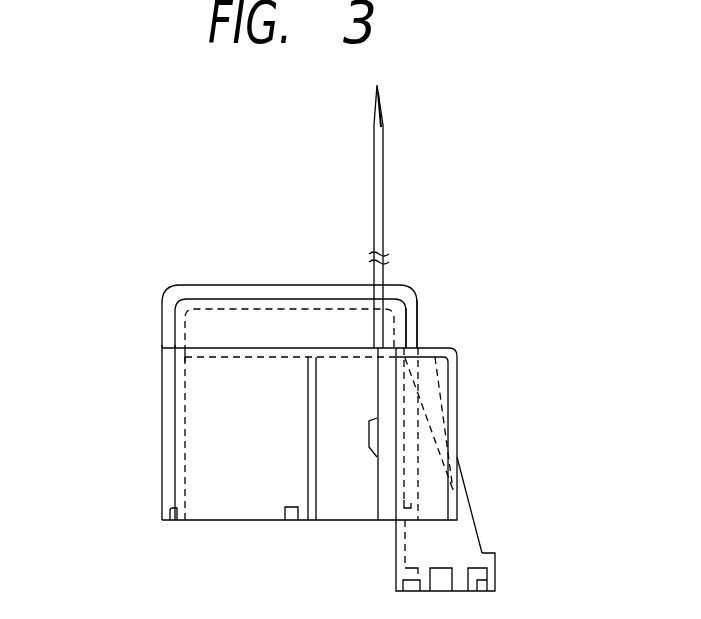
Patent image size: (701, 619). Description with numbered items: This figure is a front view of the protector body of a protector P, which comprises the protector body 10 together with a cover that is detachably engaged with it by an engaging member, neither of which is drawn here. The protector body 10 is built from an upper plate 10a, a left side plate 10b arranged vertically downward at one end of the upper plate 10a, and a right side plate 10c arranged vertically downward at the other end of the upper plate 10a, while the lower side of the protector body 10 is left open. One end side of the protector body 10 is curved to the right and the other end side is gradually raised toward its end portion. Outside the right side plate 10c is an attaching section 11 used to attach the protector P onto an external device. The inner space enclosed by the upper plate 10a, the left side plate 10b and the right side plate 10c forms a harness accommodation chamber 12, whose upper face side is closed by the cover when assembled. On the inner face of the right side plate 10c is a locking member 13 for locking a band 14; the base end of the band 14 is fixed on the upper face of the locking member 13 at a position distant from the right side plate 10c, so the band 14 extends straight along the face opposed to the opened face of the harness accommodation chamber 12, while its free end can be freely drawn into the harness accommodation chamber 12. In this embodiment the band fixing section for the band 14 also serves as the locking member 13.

The protector P is at (126, 323).
The protector body 10 is at (166, 285).
The upper plate 10a is at (272, 286).
The left side plate 10b is at (165, 415).
The right side plate 10c is at (413, 323).
The attaching section 11 is at (490, 572).
The harness accommodation chamber 12 is at (240, 478).
The locking member 13 is at (368, 445).
The band 14 is at (380, 206).